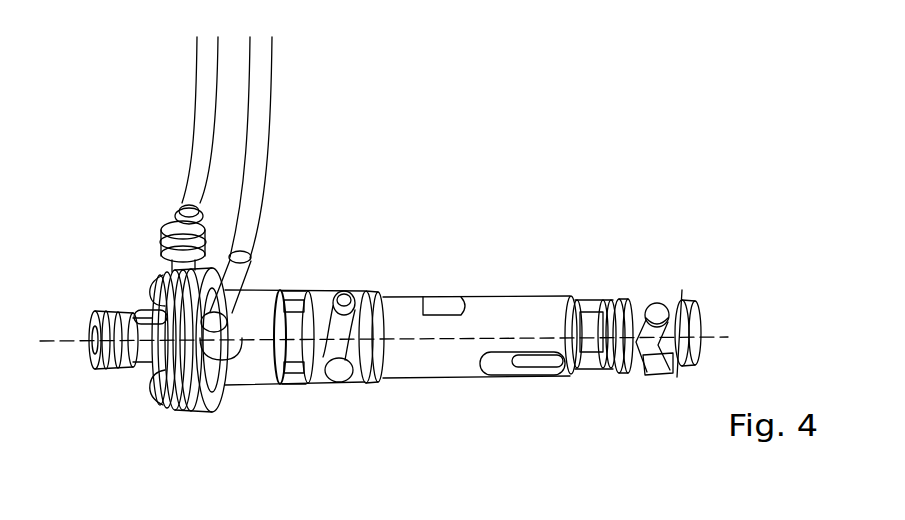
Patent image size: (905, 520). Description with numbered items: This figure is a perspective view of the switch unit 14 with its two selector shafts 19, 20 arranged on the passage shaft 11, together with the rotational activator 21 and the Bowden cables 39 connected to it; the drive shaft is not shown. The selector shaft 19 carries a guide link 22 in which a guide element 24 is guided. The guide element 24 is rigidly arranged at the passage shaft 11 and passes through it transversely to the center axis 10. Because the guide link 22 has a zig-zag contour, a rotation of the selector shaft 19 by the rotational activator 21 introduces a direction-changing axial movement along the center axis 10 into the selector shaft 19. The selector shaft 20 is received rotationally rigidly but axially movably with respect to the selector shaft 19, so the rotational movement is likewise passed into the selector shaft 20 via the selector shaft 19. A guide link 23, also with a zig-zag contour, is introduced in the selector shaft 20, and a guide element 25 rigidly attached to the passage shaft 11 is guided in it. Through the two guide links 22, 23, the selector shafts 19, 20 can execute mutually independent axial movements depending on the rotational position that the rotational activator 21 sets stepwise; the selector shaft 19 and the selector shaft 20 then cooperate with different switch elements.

The center axis 10 is at (75, 340).
The passage shaft 11 is at (298, 357).
The switch unit 14 is at (443, 219).
The selector shaft 19 is at (413, 379).
The selector shaft 20 is at (637, 372).
The rotational activator 21 is at (148, 392).
The guide link 22 is at (315, 376).
The guide link 23 is at (637, 297).
The guide element 24 is at (345, 292).
The guide element 25 is at (657, 303).
The Bowden cables 39 is at (217, 88).